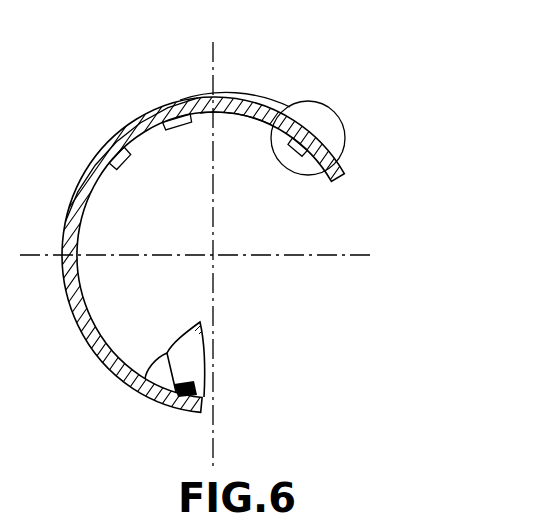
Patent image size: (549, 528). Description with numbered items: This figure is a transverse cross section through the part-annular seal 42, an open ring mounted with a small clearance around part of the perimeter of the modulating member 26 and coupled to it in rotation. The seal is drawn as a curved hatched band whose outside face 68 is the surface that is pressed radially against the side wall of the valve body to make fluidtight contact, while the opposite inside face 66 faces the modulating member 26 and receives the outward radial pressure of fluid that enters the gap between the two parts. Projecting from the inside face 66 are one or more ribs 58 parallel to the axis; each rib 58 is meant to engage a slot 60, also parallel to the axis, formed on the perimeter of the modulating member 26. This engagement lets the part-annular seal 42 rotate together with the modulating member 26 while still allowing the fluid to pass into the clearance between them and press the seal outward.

The part-annular seal 42 is at (107, 122).
The outside face 68 is at (258, 102).
The inside face 66 is at (236, 114).
The rib 58 is at (297, 152).
The slot 60 is at (167, 372).
The modulating member 26 is at (220, 359).